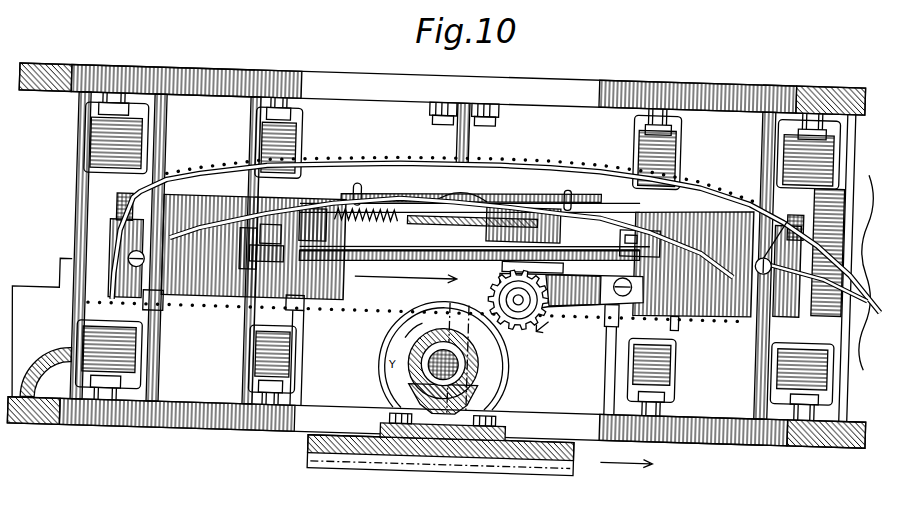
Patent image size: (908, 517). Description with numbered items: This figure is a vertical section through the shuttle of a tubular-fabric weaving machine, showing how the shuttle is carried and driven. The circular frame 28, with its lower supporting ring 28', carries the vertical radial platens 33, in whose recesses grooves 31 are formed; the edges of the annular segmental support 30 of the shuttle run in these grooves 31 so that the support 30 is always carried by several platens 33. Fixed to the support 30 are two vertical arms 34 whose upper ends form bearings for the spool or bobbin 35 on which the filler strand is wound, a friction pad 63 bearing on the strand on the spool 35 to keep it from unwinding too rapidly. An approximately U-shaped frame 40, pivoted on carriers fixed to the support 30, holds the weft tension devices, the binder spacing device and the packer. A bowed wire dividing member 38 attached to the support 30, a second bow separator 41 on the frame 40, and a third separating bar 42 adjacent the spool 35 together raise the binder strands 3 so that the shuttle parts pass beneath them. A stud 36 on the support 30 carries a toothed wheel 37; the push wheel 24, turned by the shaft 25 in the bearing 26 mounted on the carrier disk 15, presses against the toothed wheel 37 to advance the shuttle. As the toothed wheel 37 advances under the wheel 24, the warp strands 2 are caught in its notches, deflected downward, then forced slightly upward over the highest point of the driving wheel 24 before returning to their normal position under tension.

The circular frame 28 is at (442, 73).
The lower supporting ring 28' is at (435, 440).
The disk (carrier) 15 is at (311, 437).
The vertical radial platens 33 is at (683, 128).
The annular segmental support 30 is at (209, 195).
The warp strands 2 is at (723, 304).
The grooves 31 is at (157, 296).
The spool or bobbin 35 is at (382, 187).
The bow separator 41 is at (357, 195).
The friction pad 63 is at (482, 182).
The third separating bar 42 is at (525, 200).
The vertical arms 34 is at (624, 194).
The U-shaped frame 40 is at (386, 238).
The bowed wire dividing member 38 is at (540, 141).
The binder strands 3 is at (348, 150).
The stud 36 is at (558, 301).
The toothed wheel 37 is at (535, 318).
The push wheel 24 is at (509, 359).
The bearing 26 is at (421, 339).
The shaft 25 is at (432, 365).